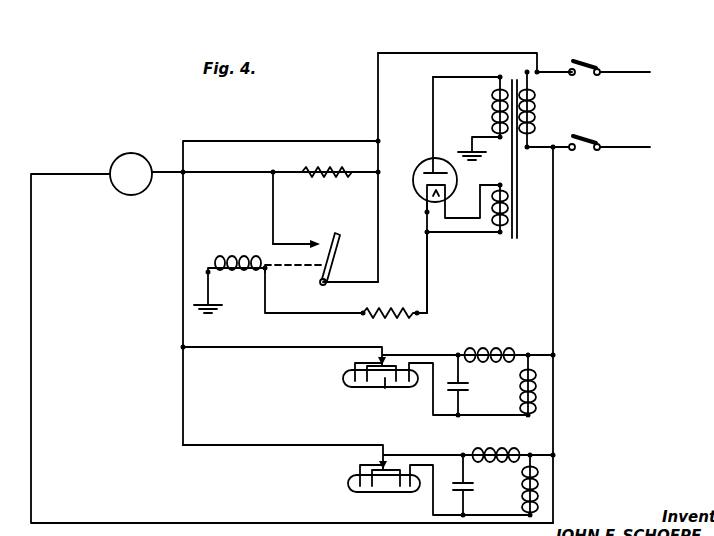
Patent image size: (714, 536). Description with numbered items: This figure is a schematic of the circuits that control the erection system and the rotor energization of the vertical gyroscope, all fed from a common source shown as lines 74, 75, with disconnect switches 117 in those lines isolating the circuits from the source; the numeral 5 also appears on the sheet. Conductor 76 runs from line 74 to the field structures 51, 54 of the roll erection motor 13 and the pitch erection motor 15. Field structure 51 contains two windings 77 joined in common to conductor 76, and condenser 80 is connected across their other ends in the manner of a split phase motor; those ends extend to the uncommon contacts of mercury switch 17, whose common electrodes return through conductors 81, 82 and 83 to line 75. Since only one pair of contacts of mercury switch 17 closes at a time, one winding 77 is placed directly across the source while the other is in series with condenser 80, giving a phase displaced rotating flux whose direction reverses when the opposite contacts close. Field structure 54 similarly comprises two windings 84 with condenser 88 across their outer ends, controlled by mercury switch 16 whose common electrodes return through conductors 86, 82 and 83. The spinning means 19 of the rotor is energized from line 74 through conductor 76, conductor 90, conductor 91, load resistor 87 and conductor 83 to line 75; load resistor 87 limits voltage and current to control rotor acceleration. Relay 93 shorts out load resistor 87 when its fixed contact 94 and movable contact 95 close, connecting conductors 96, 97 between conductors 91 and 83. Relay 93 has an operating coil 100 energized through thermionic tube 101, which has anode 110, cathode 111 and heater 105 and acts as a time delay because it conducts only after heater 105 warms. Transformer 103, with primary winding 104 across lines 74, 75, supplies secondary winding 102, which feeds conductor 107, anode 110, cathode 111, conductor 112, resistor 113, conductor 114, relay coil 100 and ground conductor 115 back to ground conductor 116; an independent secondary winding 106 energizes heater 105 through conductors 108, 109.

The spinning means 19 is at (134, 155).
The conductor 90 is at (262, 523).
The conductor 76 is at (553, 270).
The conductor 91 is at (240, 170).
The conductor 82 is at (183, 216).
The load resistor 87 is at (320, 168).
The conductor 96 is at (273, 198).
The fixed contact 94 is at (312, 242).
The movable contact 95 is at (337, 248).
The conductor 97 is at (378, 205).
The relay 93 is at (306, 300).
The operating coil 100 is at (234, 257).
The ground conductor 115 is at (208, 297).
The conductor 114 is at (308, 316).
The resistor 113 is at (410, 325).
The thermionic tube 101 is at (416, 163).
The anode 110 is at (431, 165).
The heater 105 is at (445, 200).
The cathode 111 is at (424, 210).
The conductor 112 is at (427, 293).
The conductor 107 is at (455, 85).
The conductor 108 is at (493, 184).
The conductor 109 is at (452, 234).
The ground conductor 116 is at (470, 148).
The secondary winding 102 is at (492, 112).
The transformer 103 is at (511, 242).
The primary winding 104 is at (536, 110).
The secondary winding 106 is at (518, 205).
The conductor 83 is at (428, 52).
The disconnect switch 117 is at (580, 59).
The line 75 is at (637, 69).
The line 74 is at (637, 145).
The amplifier 5 is at (665, 103).
The conductor 81 is at (281, 347).
The mercury switch 17 is at (382, 392).
The condenser 80 is at (450, 390).
The roll erection motor 13 is at (500, 338).
The windings 77 is at (511, 345).
The field structure 51 is at (512, 373).
The conductor 86 is at (286, 445).
The mercury switch 16 is at (383, 491).
The condenser 88 is at (448, 492).
The pitch erection motor 15 is at (505, 440).
The windings 84 is at (512, 448).
The field structure 54 is at (510, 477).